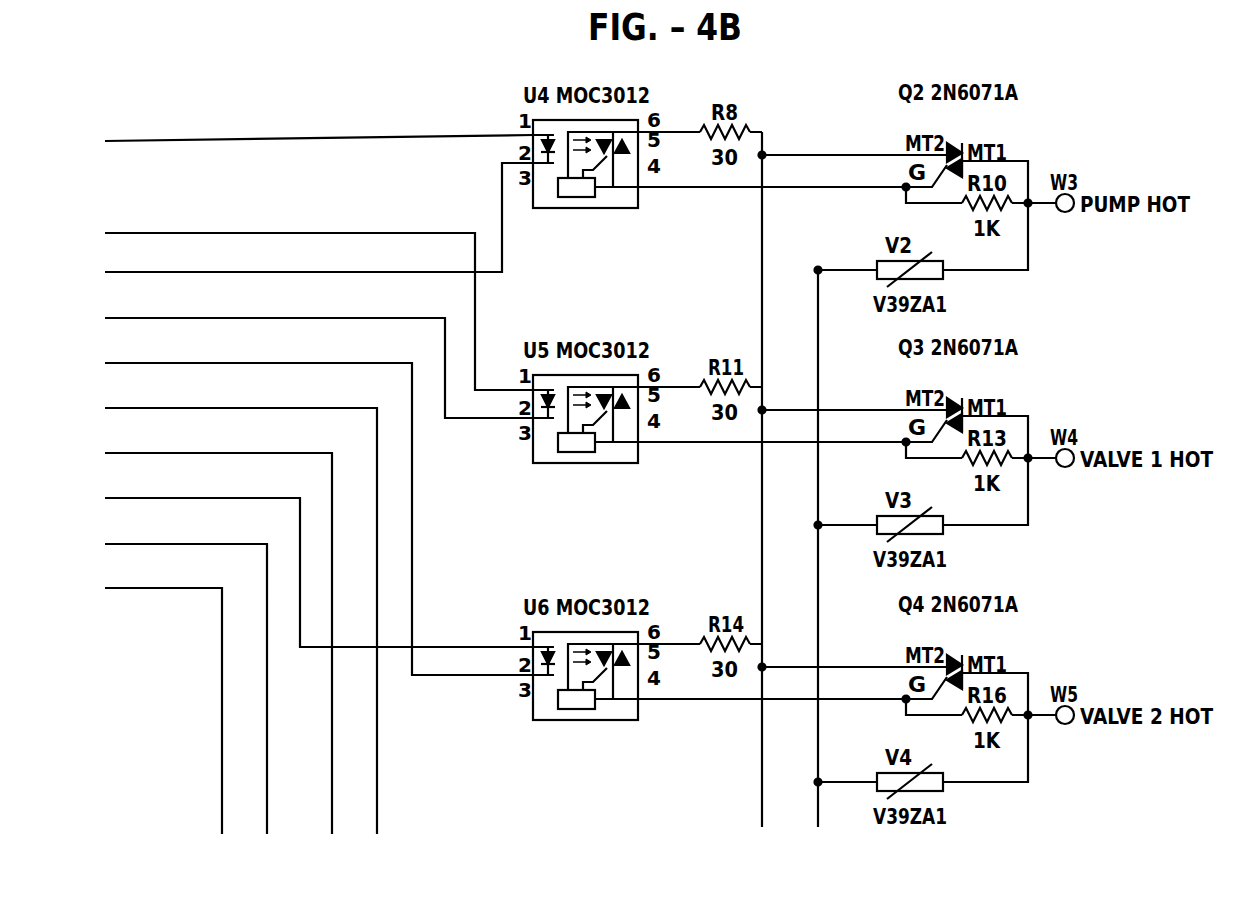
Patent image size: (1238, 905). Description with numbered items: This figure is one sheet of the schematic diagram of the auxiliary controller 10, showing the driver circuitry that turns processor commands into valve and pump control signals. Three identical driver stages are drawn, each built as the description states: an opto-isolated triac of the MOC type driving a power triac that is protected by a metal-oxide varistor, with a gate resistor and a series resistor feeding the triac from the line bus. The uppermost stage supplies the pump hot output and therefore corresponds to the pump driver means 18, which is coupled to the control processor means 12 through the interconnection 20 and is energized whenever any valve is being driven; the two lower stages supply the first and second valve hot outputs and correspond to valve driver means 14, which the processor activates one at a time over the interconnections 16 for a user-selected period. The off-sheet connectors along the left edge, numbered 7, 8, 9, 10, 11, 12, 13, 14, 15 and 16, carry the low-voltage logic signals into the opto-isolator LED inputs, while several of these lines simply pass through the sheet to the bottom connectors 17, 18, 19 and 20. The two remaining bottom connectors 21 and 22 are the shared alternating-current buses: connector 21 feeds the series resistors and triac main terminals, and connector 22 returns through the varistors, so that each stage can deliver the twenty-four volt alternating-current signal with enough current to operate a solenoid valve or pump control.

The off-page connector 7 (U4 LED anode input) 7 is at (297, 141).
The off-page connector 8 (U5 LED anode input) 8 is at (297, 303).
The off-page connector 9 (U4 LED cathode input) 9 is at (297, 225).
The auxiliary controller 10 is at (297, 360).
The off-page connector 11 (U6 LED cathode input) 11 is at (297, 511).
The control processor means 12 is at (219, 496).
The off-page connector 13 (pass-through line to connector 19) 13 is at (196, 518).
The valve driver means 14 is at (297, 564).
The off-page connector 15 (pass-through line to connector 18) 15 is at (164, 564).
The interconnections 16 is at (141, 588).
The off-page connector 17 is at (222, 740).
The pump driver means 18 is at (267, 740).
The off-page connector 19 is at (332, 740).
The interconnection 20 is at (377, 740).
The off-page connector 21 (AC line bus to triac MT2 terminals) 21 is at (762, 502).
The off-page connector 22 (AC neutral bus to varistors) 22 is at (818, 571).